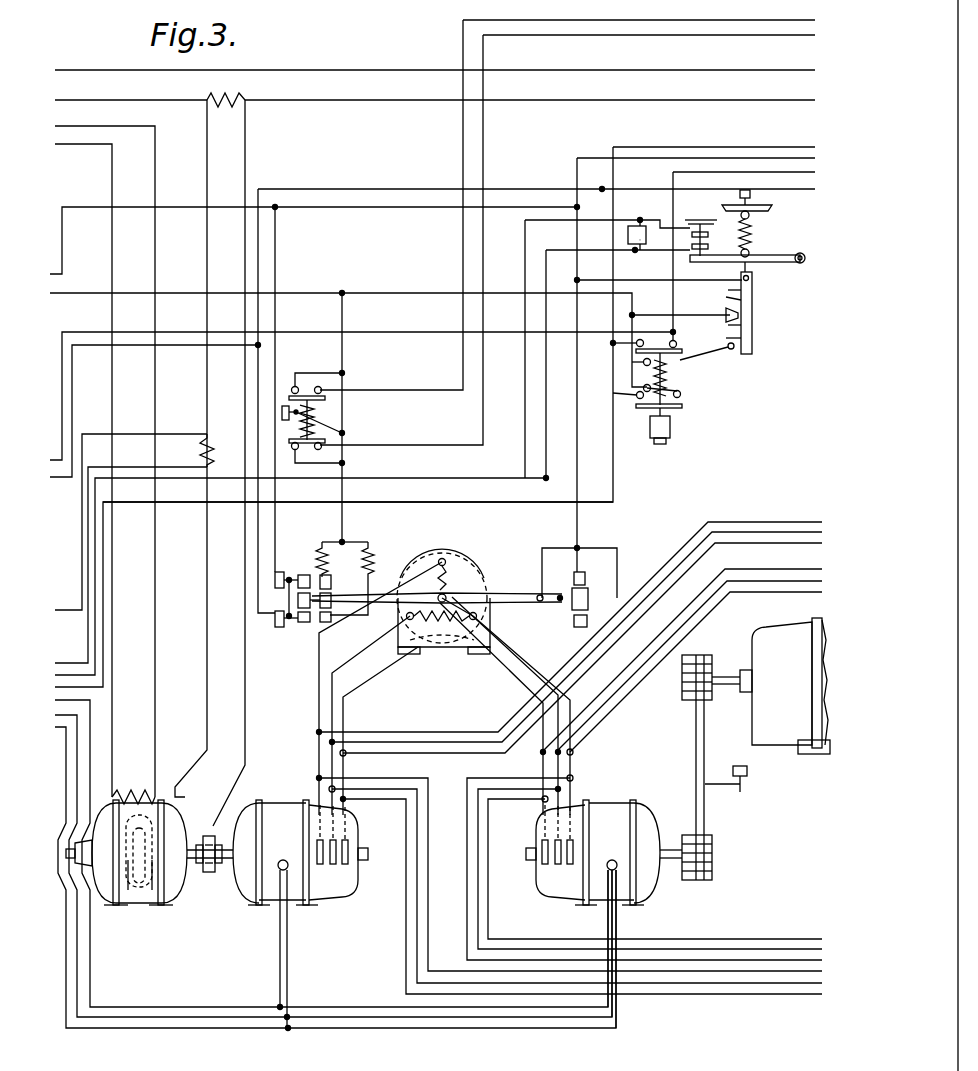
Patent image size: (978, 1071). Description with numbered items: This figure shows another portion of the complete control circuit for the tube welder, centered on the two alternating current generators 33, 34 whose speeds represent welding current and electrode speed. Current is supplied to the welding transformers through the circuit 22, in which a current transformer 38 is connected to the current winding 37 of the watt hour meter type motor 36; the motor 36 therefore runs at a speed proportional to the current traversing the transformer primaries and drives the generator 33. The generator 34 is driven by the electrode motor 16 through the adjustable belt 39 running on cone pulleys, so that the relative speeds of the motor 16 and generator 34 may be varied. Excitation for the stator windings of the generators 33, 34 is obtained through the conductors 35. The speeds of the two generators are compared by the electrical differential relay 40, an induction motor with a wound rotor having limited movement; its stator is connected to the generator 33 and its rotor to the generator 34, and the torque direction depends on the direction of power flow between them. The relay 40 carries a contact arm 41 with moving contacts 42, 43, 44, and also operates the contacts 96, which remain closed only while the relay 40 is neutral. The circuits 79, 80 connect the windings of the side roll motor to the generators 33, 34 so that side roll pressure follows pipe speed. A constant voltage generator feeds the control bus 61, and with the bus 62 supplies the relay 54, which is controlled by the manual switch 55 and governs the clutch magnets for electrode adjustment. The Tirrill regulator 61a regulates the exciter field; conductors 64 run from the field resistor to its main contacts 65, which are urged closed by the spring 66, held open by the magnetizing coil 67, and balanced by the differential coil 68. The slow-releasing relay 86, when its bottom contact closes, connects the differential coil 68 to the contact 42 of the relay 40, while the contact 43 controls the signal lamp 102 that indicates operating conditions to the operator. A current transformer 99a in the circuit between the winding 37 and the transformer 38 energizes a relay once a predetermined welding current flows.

The circuit 22 is at (435, 101).
The current transformer 38 is at (243, 103).
The current winding 37 is at (207, 780).
The control bus 61 is at (367, 206).
The bus 62 is at (382, 292).
The current transformer 99a is at (221, 440).
The conductors 64 is at (358, 477).
The main contacts 65 is at (711, 238).
The spring 66 is at (751, 235).
The Tirrill regulator 61a is at (755, 282).
The magnetizing coil 67 is at (756, 300).
The differential coil 68 is at (756, 330).
The relay 86 is at (675, 396).
The relay 54 is at (333, 418).
The manual switch 55 is at (255, 396).
The signal lamp 102 is at (371, 548).
The contacts 96 is at (275, 580).
The moving contact 43 is at (327, 593).
The moving contact 44 is at (297, 620).
The contact arm 41 is at (497, 595).
The electrical differential relay 40 is at (445, 649).
The moving contact 42 is at (588, 588).
The circuit 80 is at (769, 970).
The circuit 79 is at (783, 958).
The conductors 35 is at (326, 1031).
The motor 36 is at (168, 874).
The generator 33 is at (273, 810).
The generator 34 is at (600, 812).
The adjustable belt 39 is at (705, 740).
The motor 16 is at (775, 640).